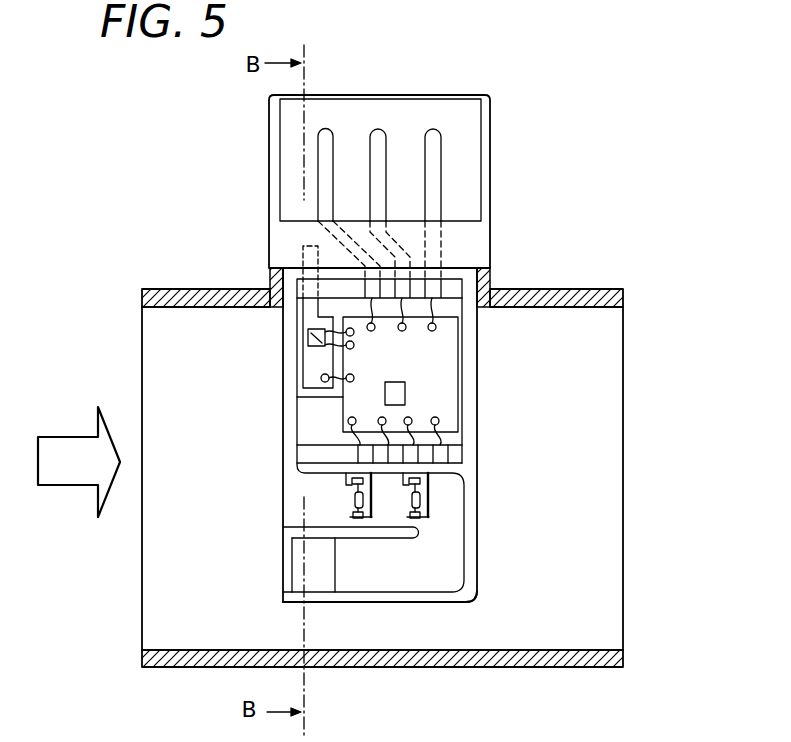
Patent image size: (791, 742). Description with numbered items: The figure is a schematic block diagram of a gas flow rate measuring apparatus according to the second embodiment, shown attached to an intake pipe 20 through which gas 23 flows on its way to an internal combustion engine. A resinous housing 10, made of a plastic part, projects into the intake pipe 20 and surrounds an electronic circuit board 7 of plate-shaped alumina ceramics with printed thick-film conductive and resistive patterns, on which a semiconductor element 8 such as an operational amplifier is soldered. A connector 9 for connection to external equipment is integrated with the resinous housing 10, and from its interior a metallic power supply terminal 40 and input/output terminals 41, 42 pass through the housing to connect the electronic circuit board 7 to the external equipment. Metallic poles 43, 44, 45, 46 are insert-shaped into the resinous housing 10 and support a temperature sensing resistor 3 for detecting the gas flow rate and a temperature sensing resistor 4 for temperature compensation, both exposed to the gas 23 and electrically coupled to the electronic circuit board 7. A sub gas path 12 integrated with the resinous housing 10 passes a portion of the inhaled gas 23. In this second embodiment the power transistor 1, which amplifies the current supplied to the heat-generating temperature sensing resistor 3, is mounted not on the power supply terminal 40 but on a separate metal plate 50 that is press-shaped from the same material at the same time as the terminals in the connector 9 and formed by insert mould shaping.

The power transistor 1 is at (307, 333).
The temperature sensing resistor 3 is at (315, 512).
The temperature sensing resistor for temperature compensation 4 is at (420, 520).
The electronic circuit board 7 is at (450, 362).
The semiconductor element 8 is at (402, 387).
The connector 9 is at (467, 235).
The resinous housing 10 is at (467, 415).
The sub gas path 12 is at (302, 540).
The intake pipe 20 is at (177, 290).
The gas 23 is at (58, 445).
The metallic power supply terminal 40 is at (326, 136).
The input/output terminal 41 is at (378, 137).
The input/output terminal 42 is at (433, 138).
The metallic pole 43 is at (342, 473).
The metallic pole 44 is at (357, 510).
The metallic pole 45 is at (403, 483).
The metallic pole 46 is at (430, 493).
The metal plate 50 is at (303, 250).